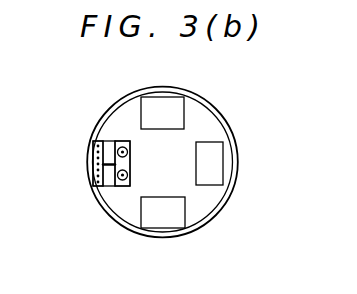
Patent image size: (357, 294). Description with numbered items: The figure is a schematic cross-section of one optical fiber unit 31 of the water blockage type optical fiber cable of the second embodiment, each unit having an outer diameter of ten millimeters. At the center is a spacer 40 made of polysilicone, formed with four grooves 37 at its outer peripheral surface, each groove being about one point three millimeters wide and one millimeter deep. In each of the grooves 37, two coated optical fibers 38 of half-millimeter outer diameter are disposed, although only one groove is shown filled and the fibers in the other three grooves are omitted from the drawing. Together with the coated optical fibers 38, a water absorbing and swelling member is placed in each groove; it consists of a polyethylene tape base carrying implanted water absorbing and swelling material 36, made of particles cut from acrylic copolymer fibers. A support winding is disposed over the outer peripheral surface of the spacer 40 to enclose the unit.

The optical fiber unit 31 is at (162, 74).
The water absorbing and swelling material 36 is at (93, 148).
The groove 37 is at (168, 114).
The coated optical fiber 38 is at (121, 188).
The spacer 40 is at (214, 194).